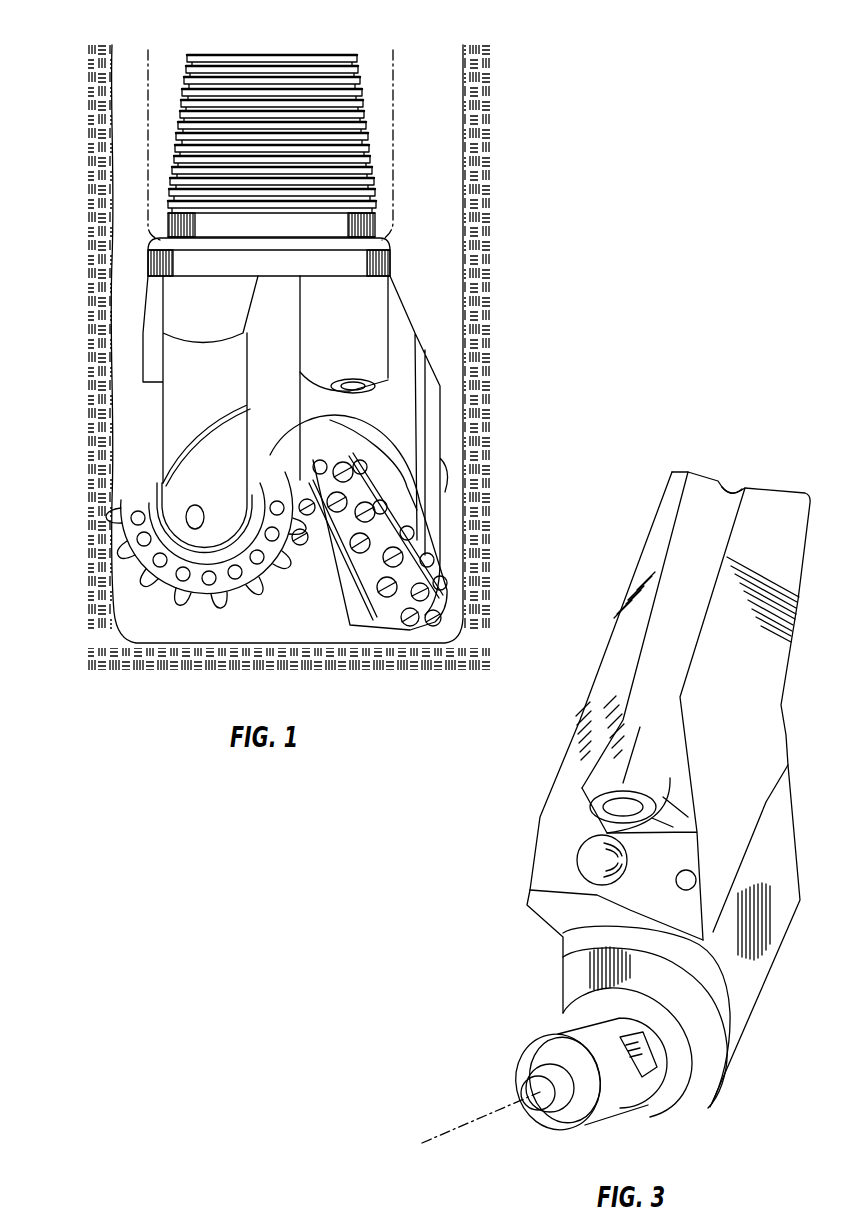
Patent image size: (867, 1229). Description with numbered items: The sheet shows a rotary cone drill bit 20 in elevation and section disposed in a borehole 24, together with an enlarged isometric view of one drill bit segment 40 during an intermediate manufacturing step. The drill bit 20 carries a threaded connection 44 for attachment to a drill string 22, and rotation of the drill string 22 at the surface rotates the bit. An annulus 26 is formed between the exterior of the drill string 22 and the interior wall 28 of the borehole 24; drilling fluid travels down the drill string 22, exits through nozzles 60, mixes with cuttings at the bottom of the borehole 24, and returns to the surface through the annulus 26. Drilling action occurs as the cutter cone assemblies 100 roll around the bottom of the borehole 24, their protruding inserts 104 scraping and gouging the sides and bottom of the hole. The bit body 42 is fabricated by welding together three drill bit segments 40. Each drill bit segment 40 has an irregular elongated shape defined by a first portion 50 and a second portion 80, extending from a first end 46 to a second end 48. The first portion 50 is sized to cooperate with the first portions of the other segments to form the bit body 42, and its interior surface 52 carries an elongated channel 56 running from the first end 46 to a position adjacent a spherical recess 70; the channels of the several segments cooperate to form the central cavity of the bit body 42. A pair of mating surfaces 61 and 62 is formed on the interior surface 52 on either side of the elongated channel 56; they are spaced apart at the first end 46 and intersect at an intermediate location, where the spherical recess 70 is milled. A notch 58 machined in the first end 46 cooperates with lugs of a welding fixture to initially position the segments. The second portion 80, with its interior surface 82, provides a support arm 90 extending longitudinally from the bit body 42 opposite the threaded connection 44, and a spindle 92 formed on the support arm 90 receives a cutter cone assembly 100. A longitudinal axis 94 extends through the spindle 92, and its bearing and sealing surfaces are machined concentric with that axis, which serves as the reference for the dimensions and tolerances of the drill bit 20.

In FIG. 1, the rotary cone drill bit 20 is at (415, 302).
In FIG. 1, the drill string 22 is at (439, 139).
In FIG. 1, the borehole 24 is at (104, 168).
In FIG. 1, the annulus 26 is at (144, 139).
In FIG. 1, the interior wall 28 is at (113, 110).
In FIG. 1, the drill bit segment 40 is at (435, 378).
In FIG. 3, the drill bit segment 40 is at (538, 808).
In FIG. 1, the bit body 42 is at (137, 292).
In FIG. 1, the threaded connection 44 is at (360, 95).
In FIG. 3, the first end 46 is at (784, 492).
In FIG. 3, the second end 48 is at (697, 1090).
In FIG. 3, the first portion 50 is at (636, 560).
In FIG. 3, the interior surface 52 is at (618, 697).
In FIG. 3, the elongated channel 56 is at (714, 541).
In FIG. 3, the notch 58 is at (735, 487).
In FIG. 1, the nozzle 60 is at (368, 392).
In FIG. 3, the first mating surface 61 is at (645, 868).
In FIG. 3, the second mating surface 62 is at (668, 513).
In FIG. 3, the spherical recess 70 is at (578, 866).
In FIG. 3, the second portion 80 is at (757, 1030).
In FIG. 3, the interior surface 82 is at (563, 918).
In FIG. 3, the support arm 90 is at (778, 870).
In FIG. 3, the spindle 92 is at (634, 1128).
In FIG. 3, the longitudinal axis 94 is at (483, 1118).
In FIG. 1, the cutter cone assembly 100 is at (160, 625).
In FIG. 1, the insert 104 is at (242, 632).